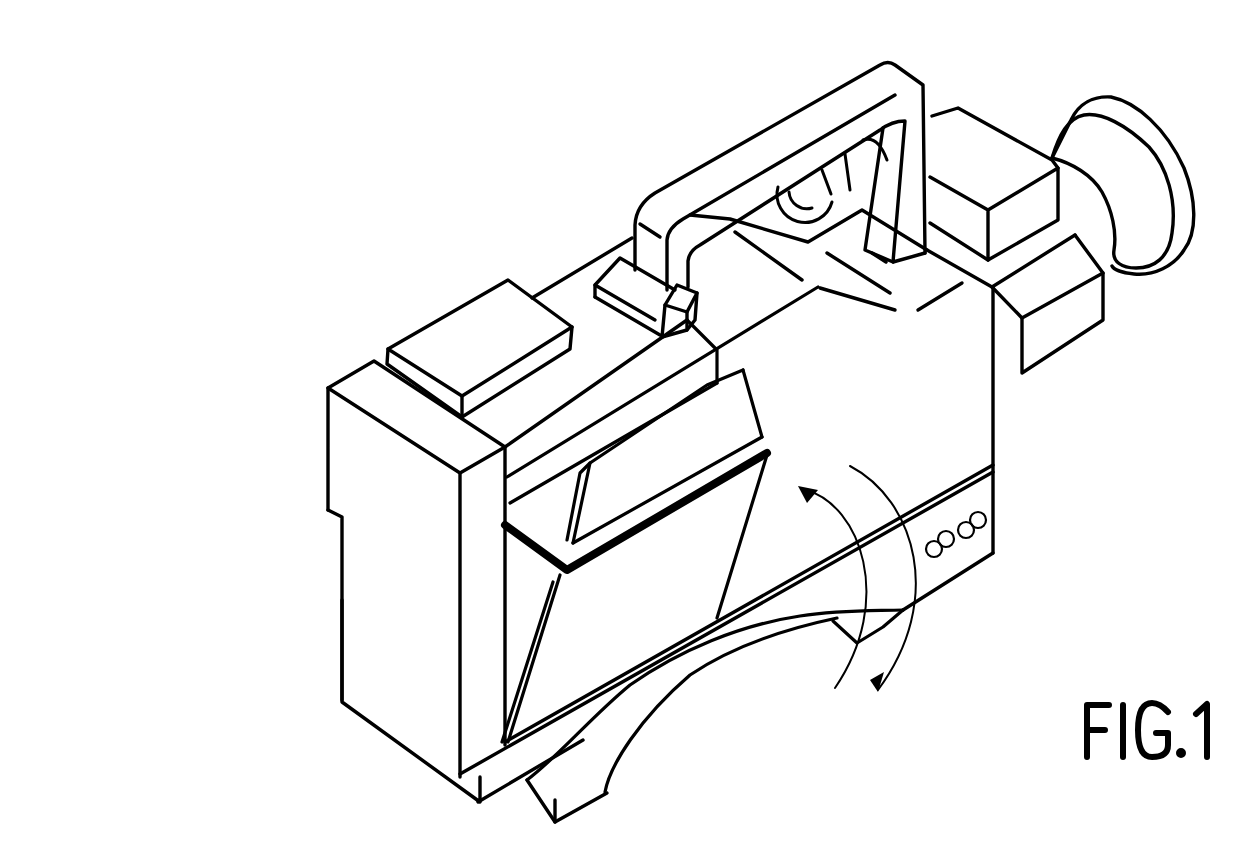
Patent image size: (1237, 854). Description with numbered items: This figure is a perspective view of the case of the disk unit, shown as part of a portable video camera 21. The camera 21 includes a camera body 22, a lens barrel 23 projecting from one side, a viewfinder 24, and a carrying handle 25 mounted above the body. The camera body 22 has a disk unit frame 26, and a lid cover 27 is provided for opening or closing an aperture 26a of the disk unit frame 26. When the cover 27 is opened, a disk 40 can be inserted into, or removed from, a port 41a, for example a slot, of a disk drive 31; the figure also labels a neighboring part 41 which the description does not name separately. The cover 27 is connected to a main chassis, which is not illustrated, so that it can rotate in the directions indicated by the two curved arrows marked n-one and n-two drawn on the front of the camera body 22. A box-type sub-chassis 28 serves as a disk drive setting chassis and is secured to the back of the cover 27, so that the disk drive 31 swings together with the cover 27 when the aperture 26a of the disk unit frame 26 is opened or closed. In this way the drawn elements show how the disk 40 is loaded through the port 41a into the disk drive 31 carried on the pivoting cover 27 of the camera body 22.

The portable video camera 21 is at (521, 106).
The camera body 22 is at (1004, 415).
The lens barrel 23 is at (1095, 237).
The viewfinder 24 is at (847, 158).
The carrying handle 25 is at (690, 195).
The disk unit frame 26 is at (585, 287).
The aperture 26a is at (525, 502).
The cover 27 is at (610, 625).
The sub-chassis 28 is at (527, 602).
The disk drive 31 is at (759, 437).
The disk 40 is at (738, 405).
The frame 41 is at (540, 550).
The port 41a is at (752, 430).